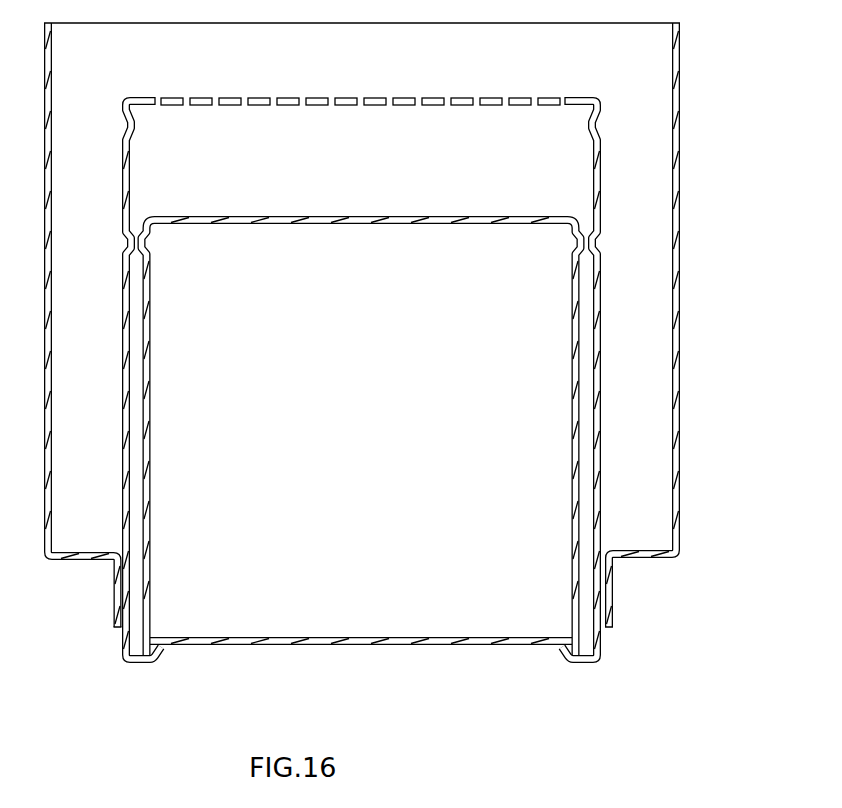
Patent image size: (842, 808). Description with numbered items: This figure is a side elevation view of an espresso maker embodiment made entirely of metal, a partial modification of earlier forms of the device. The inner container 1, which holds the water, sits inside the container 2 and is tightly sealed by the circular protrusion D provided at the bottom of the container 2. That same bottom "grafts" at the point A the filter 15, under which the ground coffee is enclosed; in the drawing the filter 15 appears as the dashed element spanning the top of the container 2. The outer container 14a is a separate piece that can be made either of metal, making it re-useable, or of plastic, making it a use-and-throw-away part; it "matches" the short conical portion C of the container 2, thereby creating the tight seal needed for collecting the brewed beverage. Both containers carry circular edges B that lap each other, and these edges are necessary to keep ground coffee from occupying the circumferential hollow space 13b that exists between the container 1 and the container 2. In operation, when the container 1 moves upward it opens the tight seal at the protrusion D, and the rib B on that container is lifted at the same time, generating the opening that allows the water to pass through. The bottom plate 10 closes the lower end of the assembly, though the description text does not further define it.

The container 14a is at (680, 165).
The container 2 is at (600, 453).
The circumferential hollow space 13b is at (150, 394).
The bottom plate 10 is at (354, 645).
The filter 15 is at (372, 97).
The container 1 is at (571, 397).
The graft point A is at (122, 104).
The circular edges B is at (124, 248).
The short conical portion C is at (116, 604).
The circular protrusion D is at (582, 664).